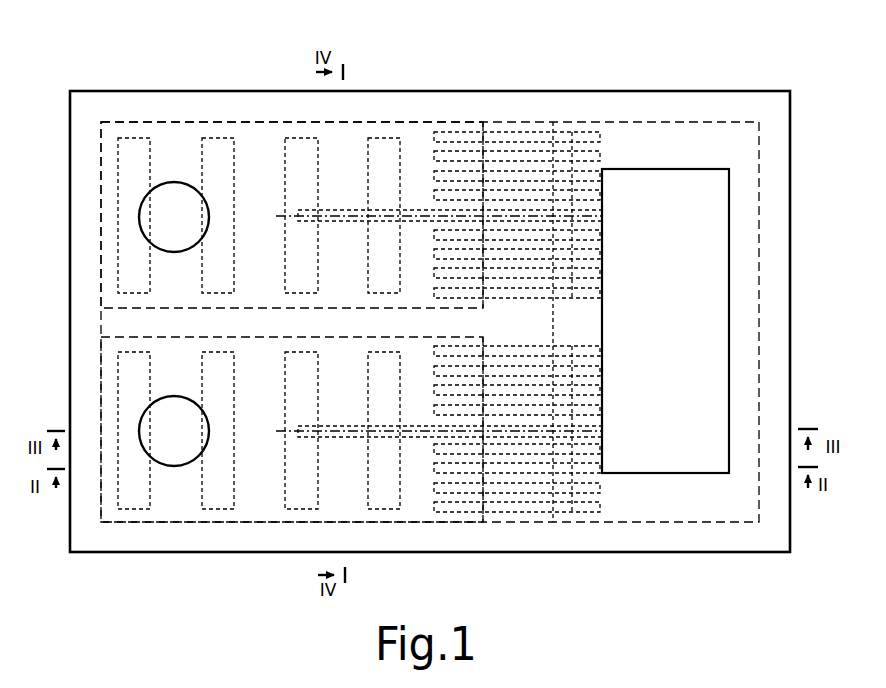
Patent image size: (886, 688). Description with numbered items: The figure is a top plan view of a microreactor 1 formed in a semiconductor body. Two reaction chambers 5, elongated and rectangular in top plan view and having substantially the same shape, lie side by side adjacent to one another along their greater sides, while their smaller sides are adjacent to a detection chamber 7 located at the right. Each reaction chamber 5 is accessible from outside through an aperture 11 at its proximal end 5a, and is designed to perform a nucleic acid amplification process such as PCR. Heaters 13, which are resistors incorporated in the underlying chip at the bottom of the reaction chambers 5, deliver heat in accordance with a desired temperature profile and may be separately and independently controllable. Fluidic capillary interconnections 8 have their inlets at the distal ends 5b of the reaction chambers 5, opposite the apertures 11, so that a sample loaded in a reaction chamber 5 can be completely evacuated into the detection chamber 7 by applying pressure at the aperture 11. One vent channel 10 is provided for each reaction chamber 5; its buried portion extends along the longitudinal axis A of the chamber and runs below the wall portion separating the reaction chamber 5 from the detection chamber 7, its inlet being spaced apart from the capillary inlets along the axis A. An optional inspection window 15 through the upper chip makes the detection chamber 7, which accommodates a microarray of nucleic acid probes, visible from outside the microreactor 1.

The microreactor 1 is at (671, 72).
The reaction chambers 5 is at (263, 138).
The proximal ends 5a is at (99, 262).
The distal ends 5b is at (470, 108).
The detection chamber 7 is at (647, 512).
The fluidic capillary interconnections 8 is at (540, 128).
The vent channel 10 is at (412, 210).
The apertures 11 is at (143, 218).
The heaters 13 is at (132, 140).
The inspection window 15 is at (720, 362).
The longitudinal axes A is at (602, 216).